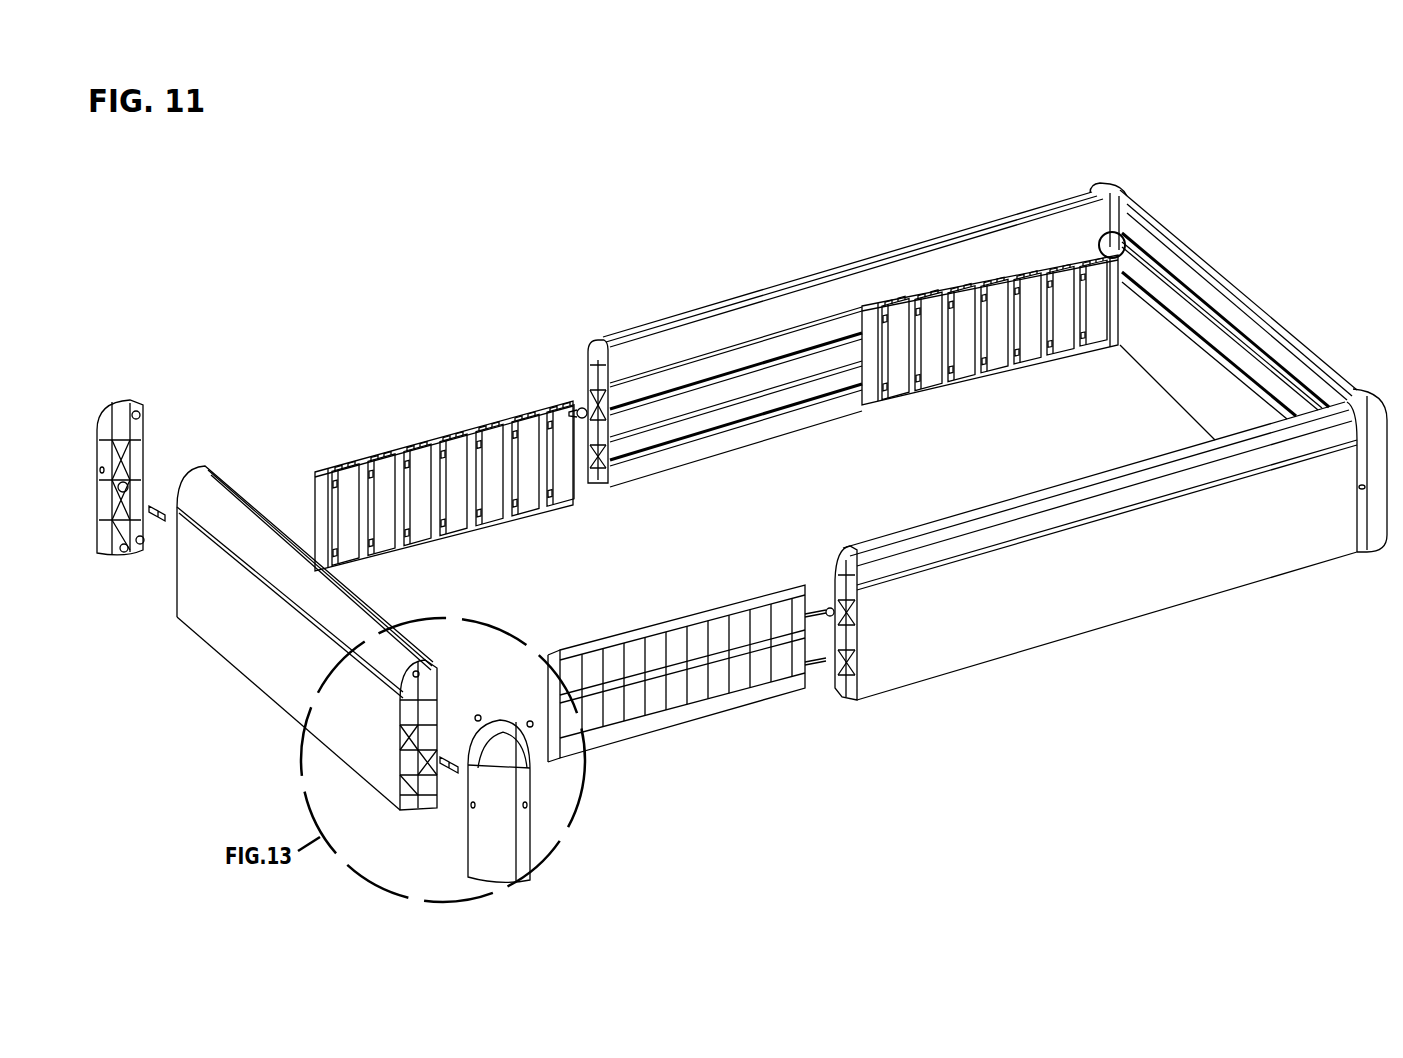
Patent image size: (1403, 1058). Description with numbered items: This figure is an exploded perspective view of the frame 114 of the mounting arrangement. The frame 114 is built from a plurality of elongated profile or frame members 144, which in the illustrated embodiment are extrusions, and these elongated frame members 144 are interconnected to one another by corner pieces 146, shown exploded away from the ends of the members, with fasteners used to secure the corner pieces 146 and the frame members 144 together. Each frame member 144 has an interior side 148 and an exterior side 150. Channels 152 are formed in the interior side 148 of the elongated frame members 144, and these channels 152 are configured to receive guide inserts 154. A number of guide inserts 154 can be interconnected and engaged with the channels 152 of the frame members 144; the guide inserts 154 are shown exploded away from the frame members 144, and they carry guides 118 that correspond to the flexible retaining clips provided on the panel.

The frame 114 is at (925, 182).
The guides 118 is at (497, 437).
The elongated frame members 144 is at (782, 501).
The corner pieces 146 is at (111, 405).
The interior side 148 is at (770, 393).
The exterior side 150 is at (1027, 610).
The channels 152 is at (713, 428).
The guide inserts 154 is at (374, 441).